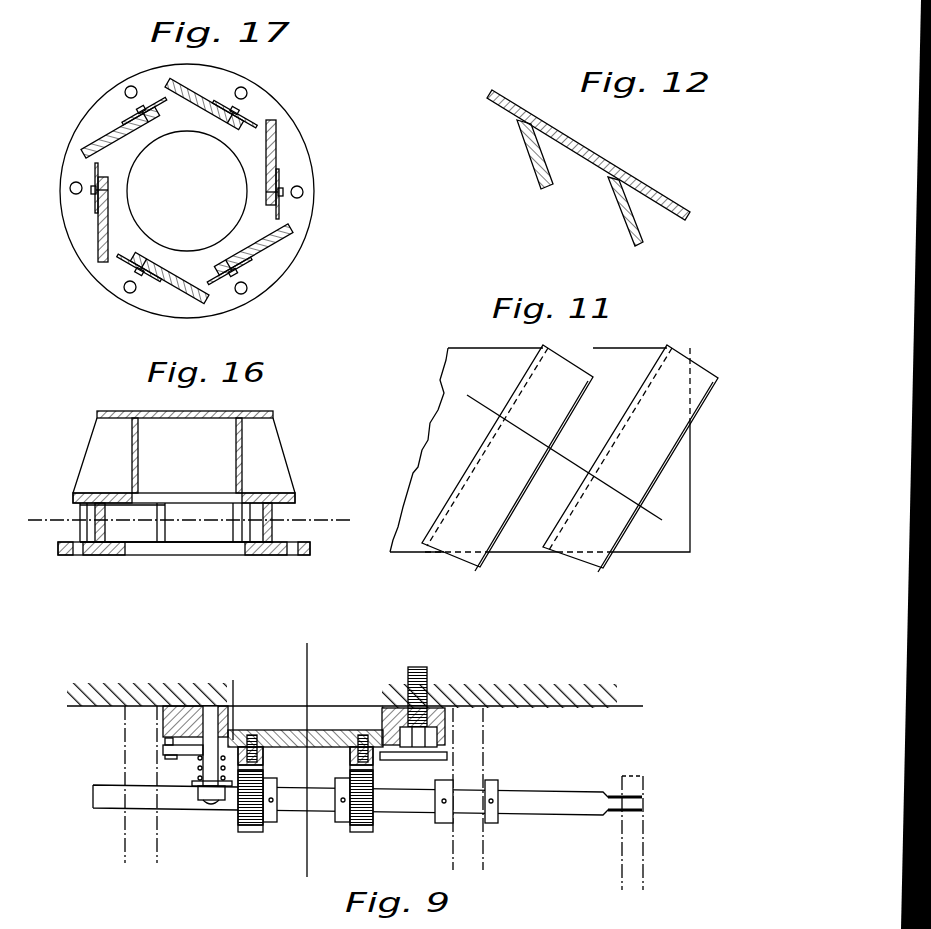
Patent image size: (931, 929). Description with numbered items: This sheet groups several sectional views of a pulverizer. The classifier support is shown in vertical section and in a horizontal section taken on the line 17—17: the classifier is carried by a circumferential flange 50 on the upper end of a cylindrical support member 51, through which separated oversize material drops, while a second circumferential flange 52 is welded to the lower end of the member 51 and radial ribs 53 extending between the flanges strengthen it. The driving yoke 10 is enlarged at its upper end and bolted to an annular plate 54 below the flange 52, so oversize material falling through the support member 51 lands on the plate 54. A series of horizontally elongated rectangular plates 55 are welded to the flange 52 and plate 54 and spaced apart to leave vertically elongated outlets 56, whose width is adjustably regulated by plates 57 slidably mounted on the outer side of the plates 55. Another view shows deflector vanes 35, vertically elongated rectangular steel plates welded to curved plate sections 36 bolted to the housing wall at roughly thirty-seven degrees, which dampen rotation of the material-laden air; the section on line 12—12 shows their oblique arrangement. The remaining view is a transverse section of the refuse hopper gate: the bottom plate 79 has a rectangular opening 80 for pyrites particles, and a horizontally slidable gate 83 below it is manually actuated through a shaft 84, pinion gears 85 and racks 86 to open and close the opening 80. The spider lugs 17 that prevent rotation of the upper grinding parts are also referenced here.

In FIG. 17, the annular plate 54 is at (278, 270).
In FIG. 16, the annular plate 54 is at (108, 555).
In FIG. 17, the horizontally elongated rectangular plates 55 is at (272, 140).
In FIG. 16, the horizontally elongated rectangular plates 55 is at (273, 541).
In FIG. 17, the vertically elongated outlets 56 is at (273, 222).
In FIG. 16, the vertically elongated outlets 56 is at (172, 545).
In FIG. 17, the plates 57 is at (130, 118).
In FIG. 16, the circumferential flange 50 is at (267, 412).
In FIG. 16, the cylindrical support member 51 is at (187, 455).
In FIG. 16, the second circumferential flange 52 is at (280, 495).
In FIG. 16, the radial ribs 53 is at (267, 455).
In FIG. 16, the lugs 17 is at (38, 518).
In FIG. 12, the curved plate sections 36 is at (600, 165).
In FIG. 11, the curved plate sections 36 is at (630, 352).
In FIG. 12, the deflector vanes 35 is at (620, 217).
In FIG. 11, the deflector vanes 35 is at (618, 428).
In FIG. 11, the track 12 is at (477, 402).
In FIG. 9, the bottom plate 79 is at (235, 693).
In FIG. 9, the rectangular opening 80 is at (338, 731).
In FIG. 9, the horizontally slidable gate 83 is at (277, 731).
In FIG. 9, the shaft 84 is at (535, 798).
In FIG. 9, the pinion gears 85 is at (350, 827).
In FIG. 9, the racks 86 is at (352, 757).
In FIG. 9, the drive yoke 10 is at (307, 652).